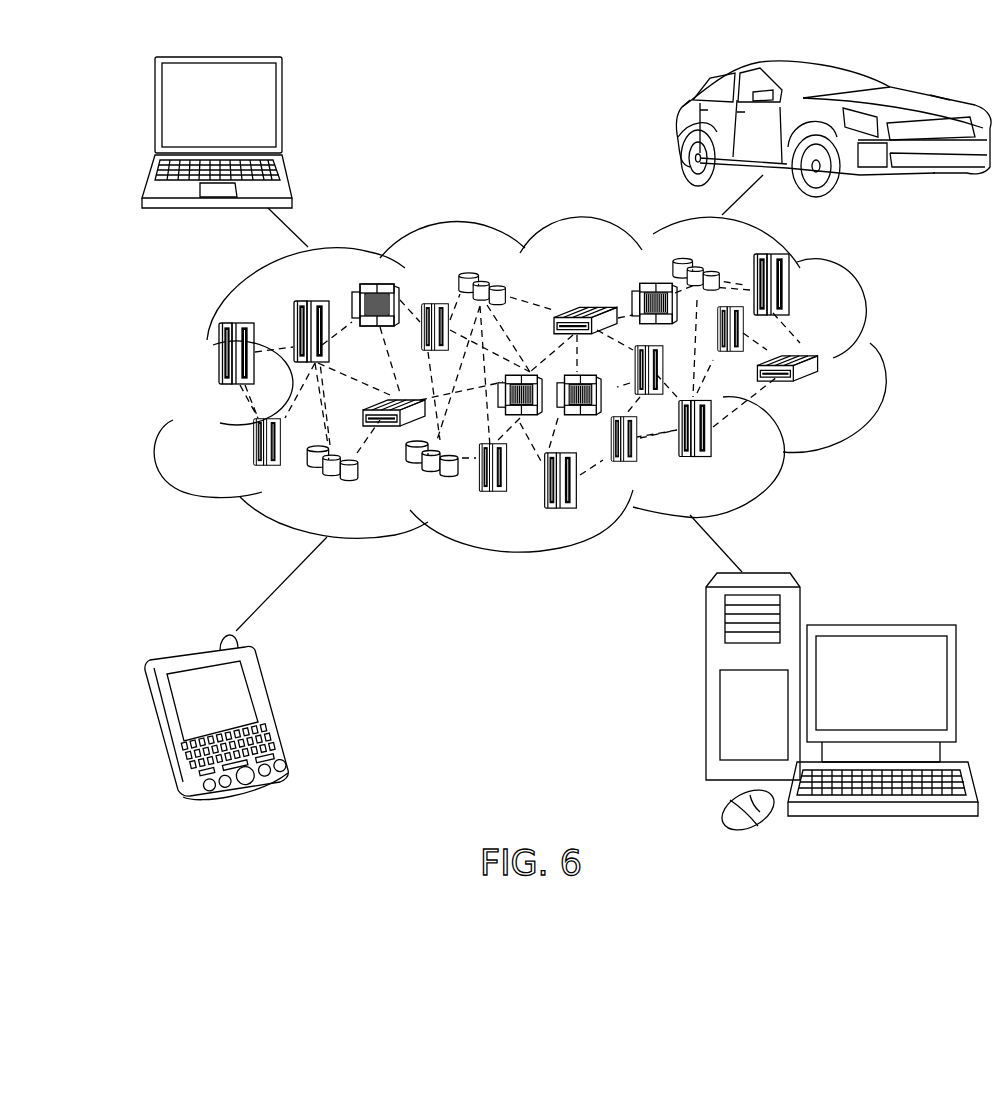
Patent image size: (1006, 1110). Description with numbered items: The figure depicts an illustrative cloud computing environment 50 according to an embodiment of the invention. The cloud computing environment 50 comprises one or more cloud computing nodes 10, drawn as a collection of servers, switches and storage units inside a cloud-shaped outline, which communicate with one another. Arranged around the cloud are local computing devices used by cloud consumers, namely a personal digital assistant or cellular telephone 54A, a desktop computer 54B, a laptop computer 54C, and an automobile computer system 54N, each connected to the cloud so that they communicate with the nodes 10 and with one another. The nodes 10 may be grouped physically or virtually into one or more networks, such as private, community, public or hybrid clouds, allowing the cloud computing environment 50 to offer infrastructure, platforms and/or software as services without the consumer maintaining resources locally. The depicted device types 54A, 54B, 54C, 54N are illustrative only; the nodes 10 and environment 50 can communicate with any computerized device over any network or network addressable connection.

The cloud computing environment 50 is at (879, 362).
The cloud computing node 10 is at (825, 390).
The personal digital assistant or cellular telephone 54A is at (270, 711).
The desktop computer 54B is at (878, 625).
The laptop computer 54C is at (282, 113).
The automobile computer system 54N is at (681, 128).